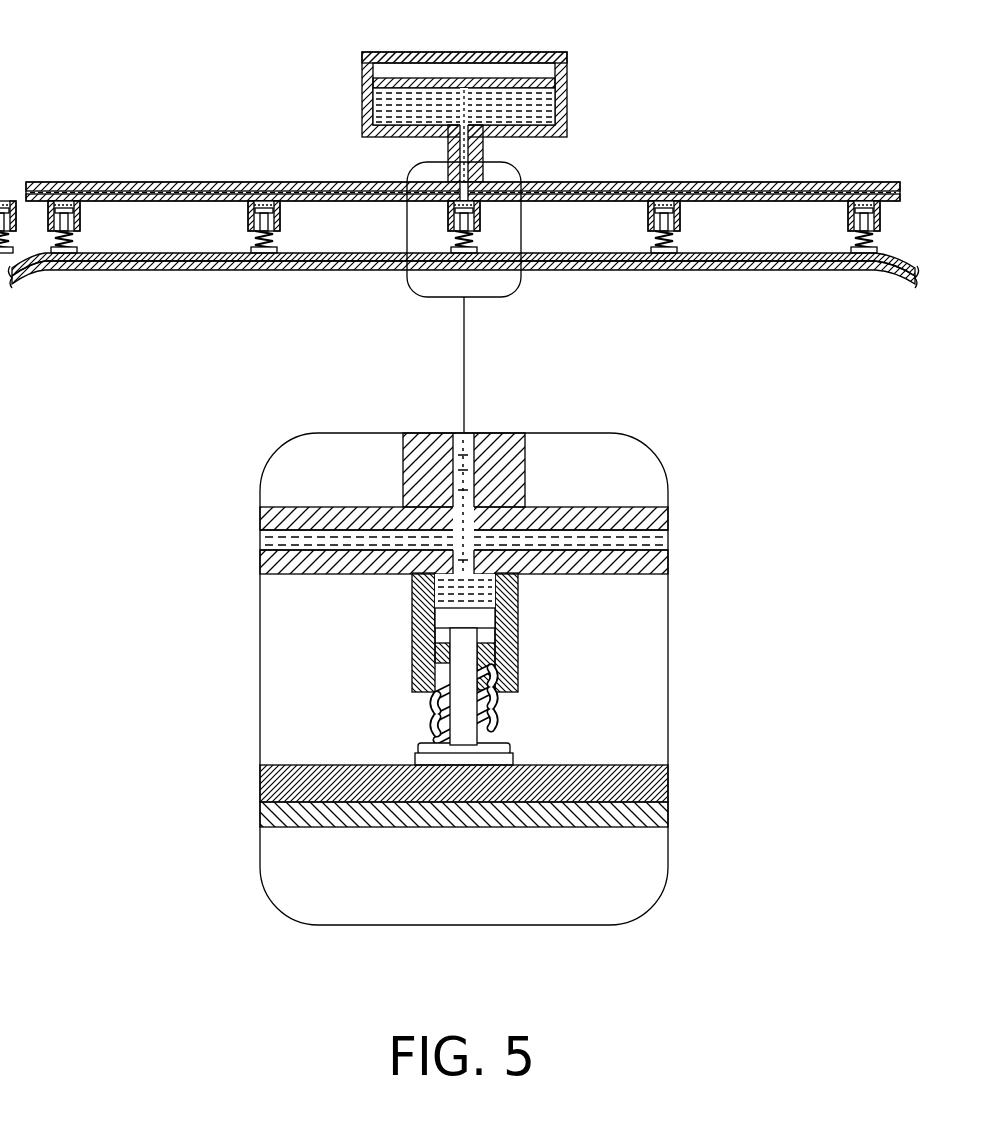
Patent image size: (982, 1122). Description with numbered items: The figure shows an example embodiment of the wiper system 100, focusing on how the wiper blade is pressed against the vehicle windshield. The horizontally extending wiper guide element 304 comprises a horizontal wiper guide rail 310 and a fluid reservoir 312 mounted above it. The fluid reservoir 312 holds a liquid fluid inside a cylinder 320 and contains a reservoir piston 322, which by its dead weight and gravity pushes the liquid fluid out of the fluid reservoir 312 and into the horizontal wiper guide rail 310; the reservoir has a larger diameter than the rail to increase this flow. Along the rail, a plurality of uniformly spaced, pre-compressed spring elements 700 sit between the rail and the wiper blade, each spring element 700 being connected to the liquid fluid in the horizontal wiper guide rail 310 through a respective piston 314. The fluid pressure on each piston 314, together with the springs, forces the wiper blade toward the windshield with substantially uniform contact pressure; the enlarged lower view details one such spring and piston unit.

The wiper system 100 is at (225, 103).
The horizontally extending wiper guide element 304 is at (703, 182).
The horizontal wiper guide rail 310 is at (780, 182).
The fluid reservoir 312 is at (522, 110).
The piston 314 is at (467, 618).
The cylinder 320 is at (440, 58).
The reservoir piston 322 is at (512, 82).
The spring element 700 is at (395, 707).